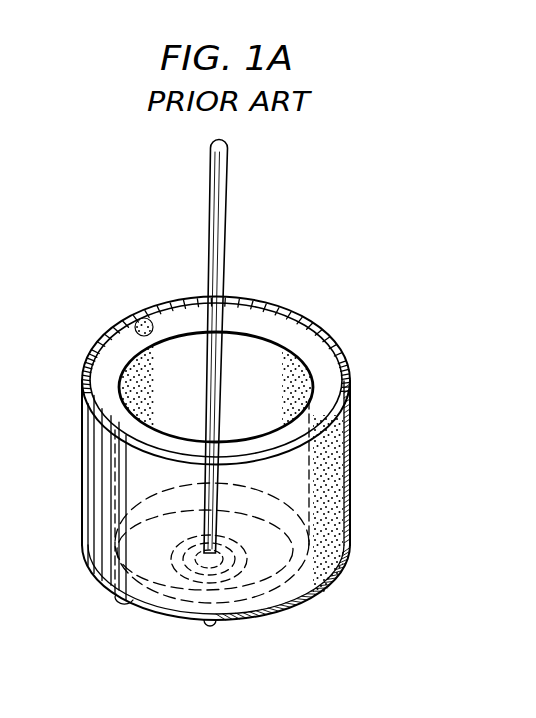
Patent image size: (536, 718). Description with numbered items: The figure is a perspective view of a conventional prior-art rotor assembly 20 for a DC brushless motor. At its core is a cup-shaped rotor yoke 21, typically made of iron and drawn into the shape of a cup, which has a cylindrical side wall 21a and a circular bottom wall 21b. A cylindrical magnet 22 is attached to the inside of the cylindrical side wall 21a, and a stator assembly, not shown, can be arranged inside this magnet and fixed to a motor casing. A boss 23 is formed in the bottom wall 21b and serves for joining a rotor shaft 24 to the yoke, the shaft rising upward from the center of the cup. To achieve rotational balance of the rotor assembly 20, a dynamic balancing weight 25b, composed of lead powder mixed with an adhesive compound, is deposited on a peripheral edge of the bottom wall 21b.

The rotor assembly 20 is at (102, 293).
The rotor yoke 21 is at (315, 322).
The cylindrical side wall 21a is at (82, 505).
The circular bottom wall 21b is at (295, 601).
The cylindrical magnet 22 is at (350, 453).
The boss 23 is at (184, 562).
The rotor shaft 24 is at (227, 203).
The dynamic balancing weight 25b is at (120, 601).